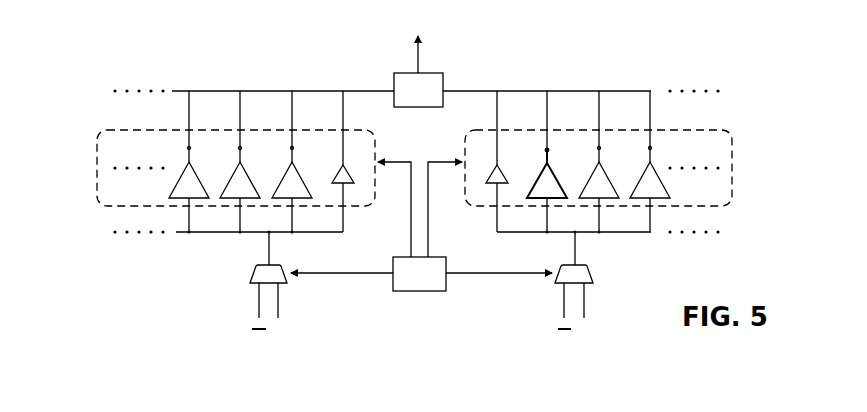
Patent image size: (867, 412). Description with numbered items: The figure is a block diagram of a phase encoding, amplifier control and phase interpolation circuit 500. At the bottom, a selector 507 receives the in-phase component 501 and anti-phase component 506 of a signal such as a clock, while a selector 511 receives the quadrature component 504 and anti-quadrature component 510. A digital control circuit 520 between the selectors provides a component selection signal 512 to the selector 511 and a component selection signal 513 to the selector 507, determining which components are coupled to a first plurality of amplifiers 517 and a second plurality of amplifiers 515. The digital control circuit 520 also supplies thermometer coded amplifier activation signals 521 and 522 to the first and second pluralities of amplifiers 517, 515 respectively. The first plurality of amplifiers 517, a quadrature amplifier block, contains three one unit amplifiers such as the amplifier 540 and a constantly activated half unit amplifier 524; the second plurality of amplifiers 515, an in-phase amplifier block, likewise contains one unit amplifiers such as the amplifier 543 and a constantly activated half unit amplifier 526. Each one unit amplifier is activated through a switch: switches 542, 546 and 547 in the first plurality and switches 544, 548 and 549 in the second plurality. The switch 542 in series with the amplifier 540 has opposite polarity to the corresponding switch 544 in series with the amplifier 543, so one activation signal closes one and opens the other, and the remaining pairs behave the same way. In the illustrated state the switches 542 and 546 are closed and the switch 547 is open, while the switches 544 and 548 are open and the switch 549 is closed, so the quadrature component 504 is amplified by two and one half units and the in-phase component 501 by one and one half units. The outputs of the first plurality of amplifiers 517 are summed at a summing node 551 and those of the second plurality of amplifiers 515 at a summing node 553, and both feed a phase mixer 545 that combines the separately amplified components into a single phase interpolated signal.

The circuit 500 is at (697, 54).
The in-phase component 501 is at (591, 365).
The quadrature component 504 is at (284, 367).
The anti-phase component 506 is at (565, 363).
The selector 507 is at (603, 276).
The anti-quadrature component 510 is at (257, 365).
The selector 511 is at (250, 278).
The component selection signal 512 is at (337, 285).
The component selection signal 513 is at (501, 285).
The second plurality of amplifiers 515 is at (740, 193).
The first plurality of amplifiers 517 is at (90, 199).
The digital control circuit 520 is at (417, 299).
The amplifier activation signals 521 is at (402, 214).
The amplifier activation signals 522 is at (436, 214).
The half unit amplifier 524 is at (360, 167).
The half unit amplifier 526 is at (486, 167).
The one unit amplifier 540 is at (205, 176).
The switch 542 is at (186, 141).
The one unit amplifier 543 is at (560, 176).
The switch 544 is at (544, 141).
The phase mixer 545 is at (442, 70).
The switch 546 is at (237, 141).
The switch 547 is at (290, 141).
The switch 548 is at (596, 141).
The switch 549 is at (647, 141).
The summing node 551 is at (342, 87).
The summing node 553 is at (598, 87).